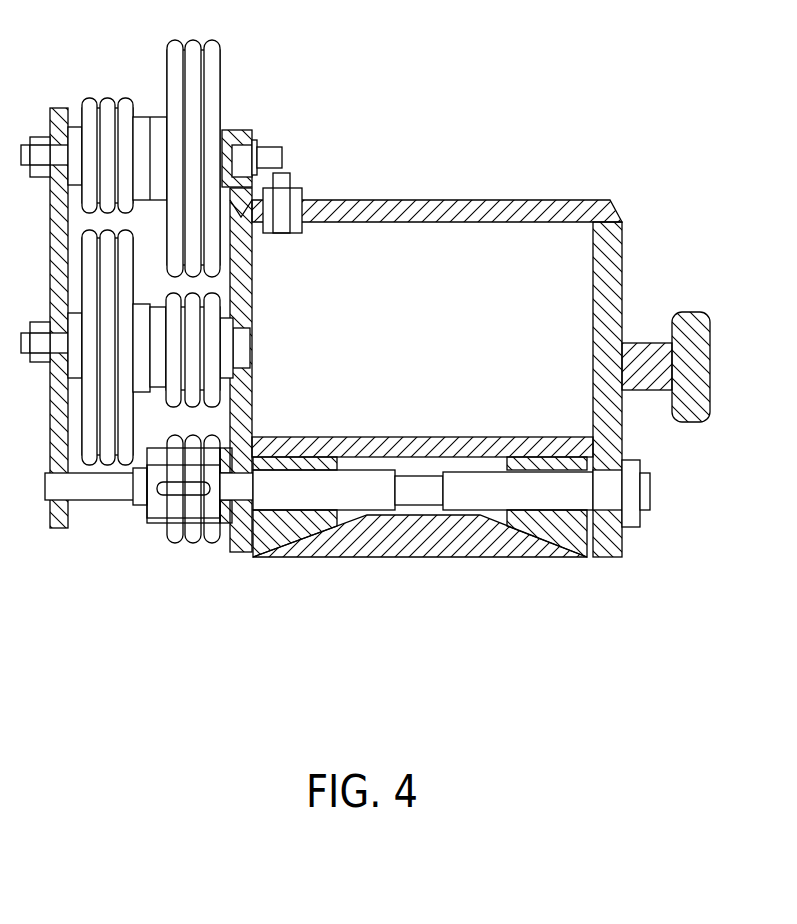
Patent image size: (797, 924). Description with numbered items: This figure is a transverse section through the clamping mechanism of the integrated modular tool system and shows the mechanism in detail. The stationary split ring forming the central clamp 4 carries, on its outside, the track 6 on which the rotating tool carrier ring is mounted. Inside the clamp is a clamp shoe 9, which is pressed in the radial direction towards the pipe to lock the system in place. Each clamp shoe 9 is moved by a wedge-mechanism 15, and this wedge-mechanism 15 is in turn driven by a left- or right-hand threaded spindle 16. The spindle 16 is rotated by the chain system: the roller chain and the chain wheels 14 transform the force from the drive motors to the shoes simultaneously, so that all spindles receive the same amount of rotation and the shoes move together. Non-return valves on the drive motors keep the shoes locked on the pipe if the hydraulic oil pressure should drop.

The central clamp 4 is at (417, 200).
The track 6 is at (682, 312).
The clamp shoe 9 is at (373, 538).
The chain wheel 14 is at (143, 130).
The wedge-mechanism 15 is at (292, 527).
The threaded spindle 16 is at (422, 480).